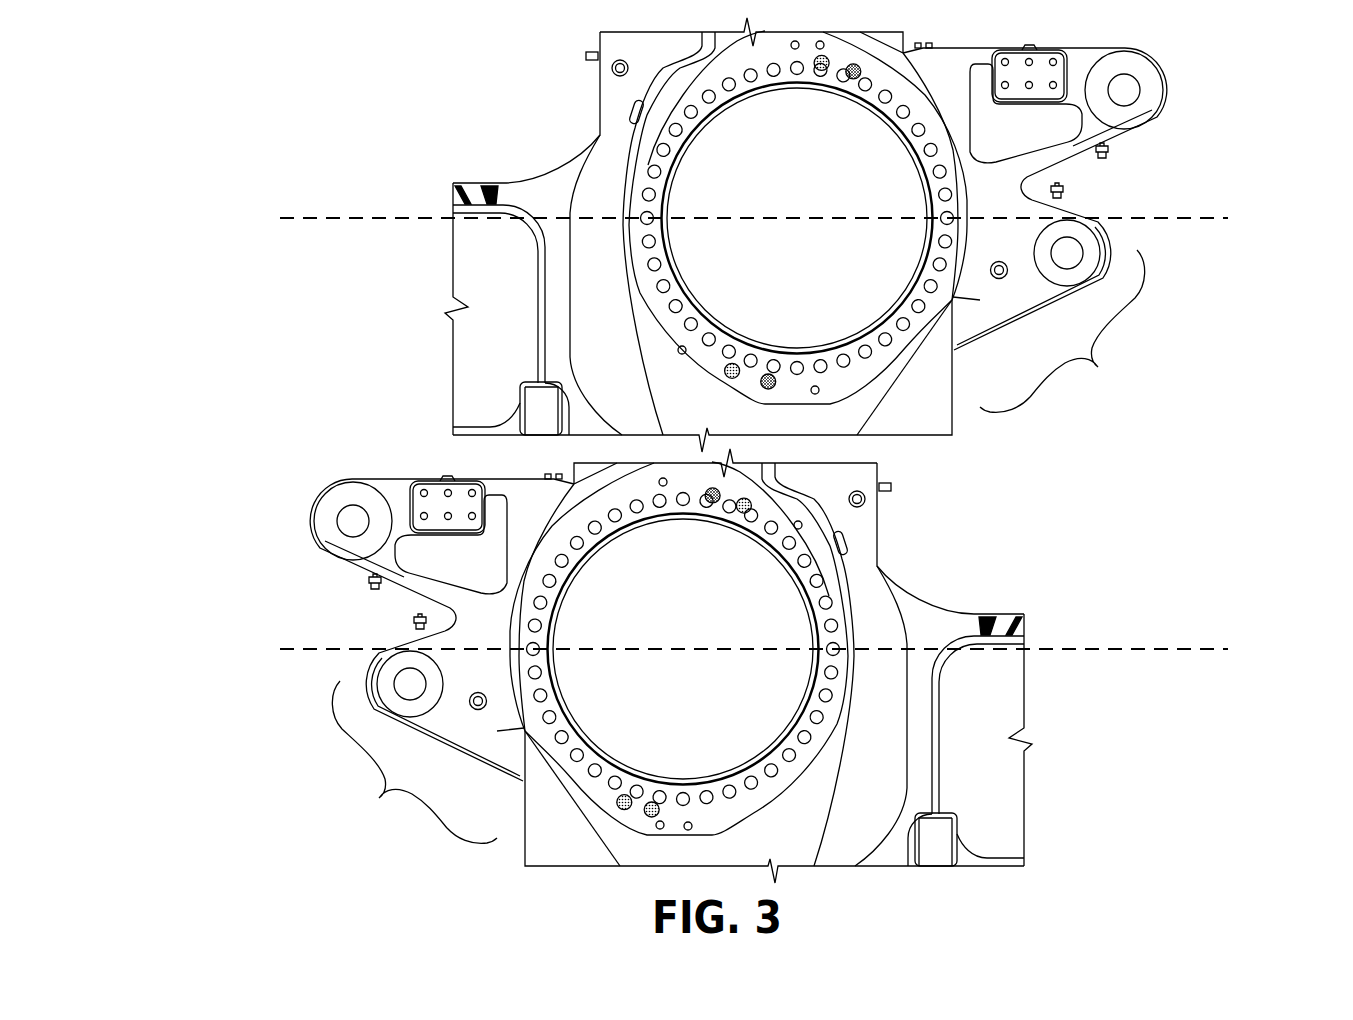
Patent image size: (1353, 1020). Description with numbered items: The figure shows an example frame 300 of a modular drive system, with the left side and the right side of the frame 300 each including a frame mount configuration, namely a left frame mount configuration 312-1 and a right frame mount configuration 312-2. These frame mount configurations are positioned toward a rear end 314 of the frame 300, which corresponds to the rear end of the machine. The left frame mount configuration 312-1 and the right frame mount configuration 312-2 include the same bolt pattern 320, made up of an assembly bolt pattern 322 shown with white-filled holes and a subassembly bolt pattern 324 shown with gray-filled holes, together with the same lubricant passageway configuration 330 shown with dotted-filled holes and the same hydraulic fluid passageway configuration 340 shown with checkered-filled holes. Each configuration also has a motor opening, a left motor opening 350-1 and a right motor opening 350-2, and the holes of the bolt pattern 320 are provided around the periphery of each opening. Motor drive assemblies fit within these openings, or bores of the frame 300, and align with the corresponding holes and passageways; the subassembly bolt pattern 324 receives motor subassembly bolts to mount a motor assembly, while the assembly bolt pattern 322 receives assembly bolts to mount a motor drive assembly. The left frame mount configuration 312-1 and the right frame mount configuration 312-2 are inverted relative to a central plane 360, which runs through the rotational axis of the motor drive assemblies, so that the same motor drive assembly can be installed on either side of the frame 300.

The frame 300 is at (228, 62).
The left frame mount configuration 312-1 is at (1071, 331).
The right frame mount configuration 312-2 is at (414, 771).
The rear end 314 is at (1167, 206).
The bolt pattern 320 is at (740, 73).
The assembly bolt pattern 322 is at (581, 434).
The subassembly bolt pattern 324 is at (516, 435).
The lubricant passageway configuration 330 is at (517, 436).
The hydraulic fluid passageway configuration 340 is at (533, 283).
The left motor opening 350-1 is at (748, 147).
The right motor opening 350-2 is at (768, 720).
The central plane 360 is at (1222, 218).